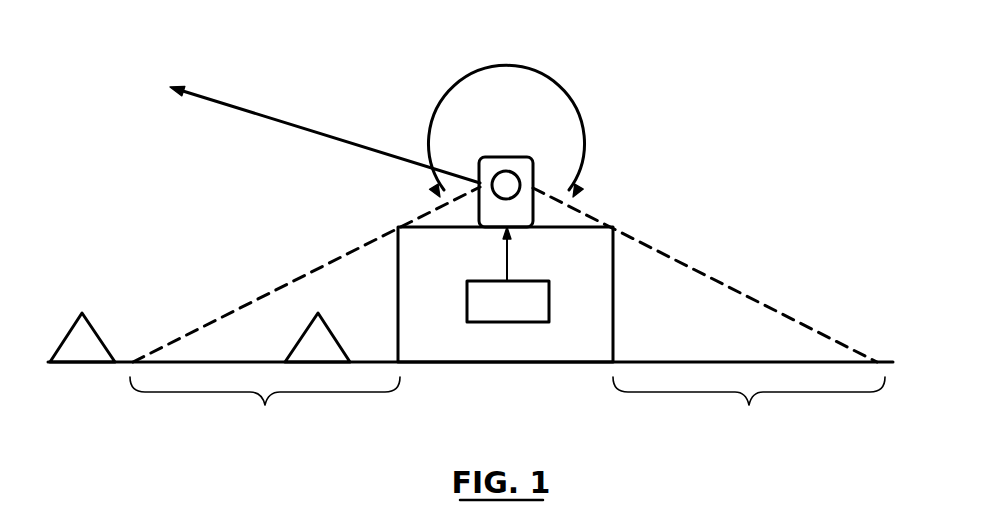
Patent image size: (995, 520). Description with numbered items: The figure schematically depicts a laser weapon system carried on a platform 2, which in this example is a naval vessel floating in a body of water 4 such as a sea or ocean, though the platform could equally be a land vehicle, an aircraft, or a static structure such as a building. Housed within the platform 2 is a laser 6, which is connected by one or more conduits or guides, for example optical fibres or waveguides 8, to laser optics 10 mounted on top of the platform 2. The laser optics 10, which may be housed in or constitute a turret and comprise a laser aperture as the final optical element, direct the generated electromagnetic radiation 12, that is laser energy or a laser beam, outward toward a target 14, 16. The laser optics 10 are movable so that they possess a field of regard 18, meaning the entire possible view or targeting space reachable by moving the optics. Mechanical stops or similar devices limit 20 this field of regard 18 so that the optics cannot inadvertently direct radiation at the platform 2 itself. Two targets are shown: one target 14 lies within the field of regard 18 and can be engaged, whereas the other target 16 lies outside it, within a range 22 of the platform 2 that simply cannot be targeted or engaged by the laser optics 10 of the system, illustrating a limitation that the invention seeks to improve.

The platform 2 is at (507, 348).
The body of water 4 is at (444, 404).
The laser 6 is at (462, 300).
The optical fibres or waveguides 8 is at (514, 260).
The laser optics 10 is at (487, 230).
The electromagnetic radiation 12 is at (228, 100).
The target 14 is at (68, 327).
The target 16 is at (328, 338).
The field of regard 18 is at (588, 137).
The limit 20 is at (268, 283).
The range 22 is at (507, 409).